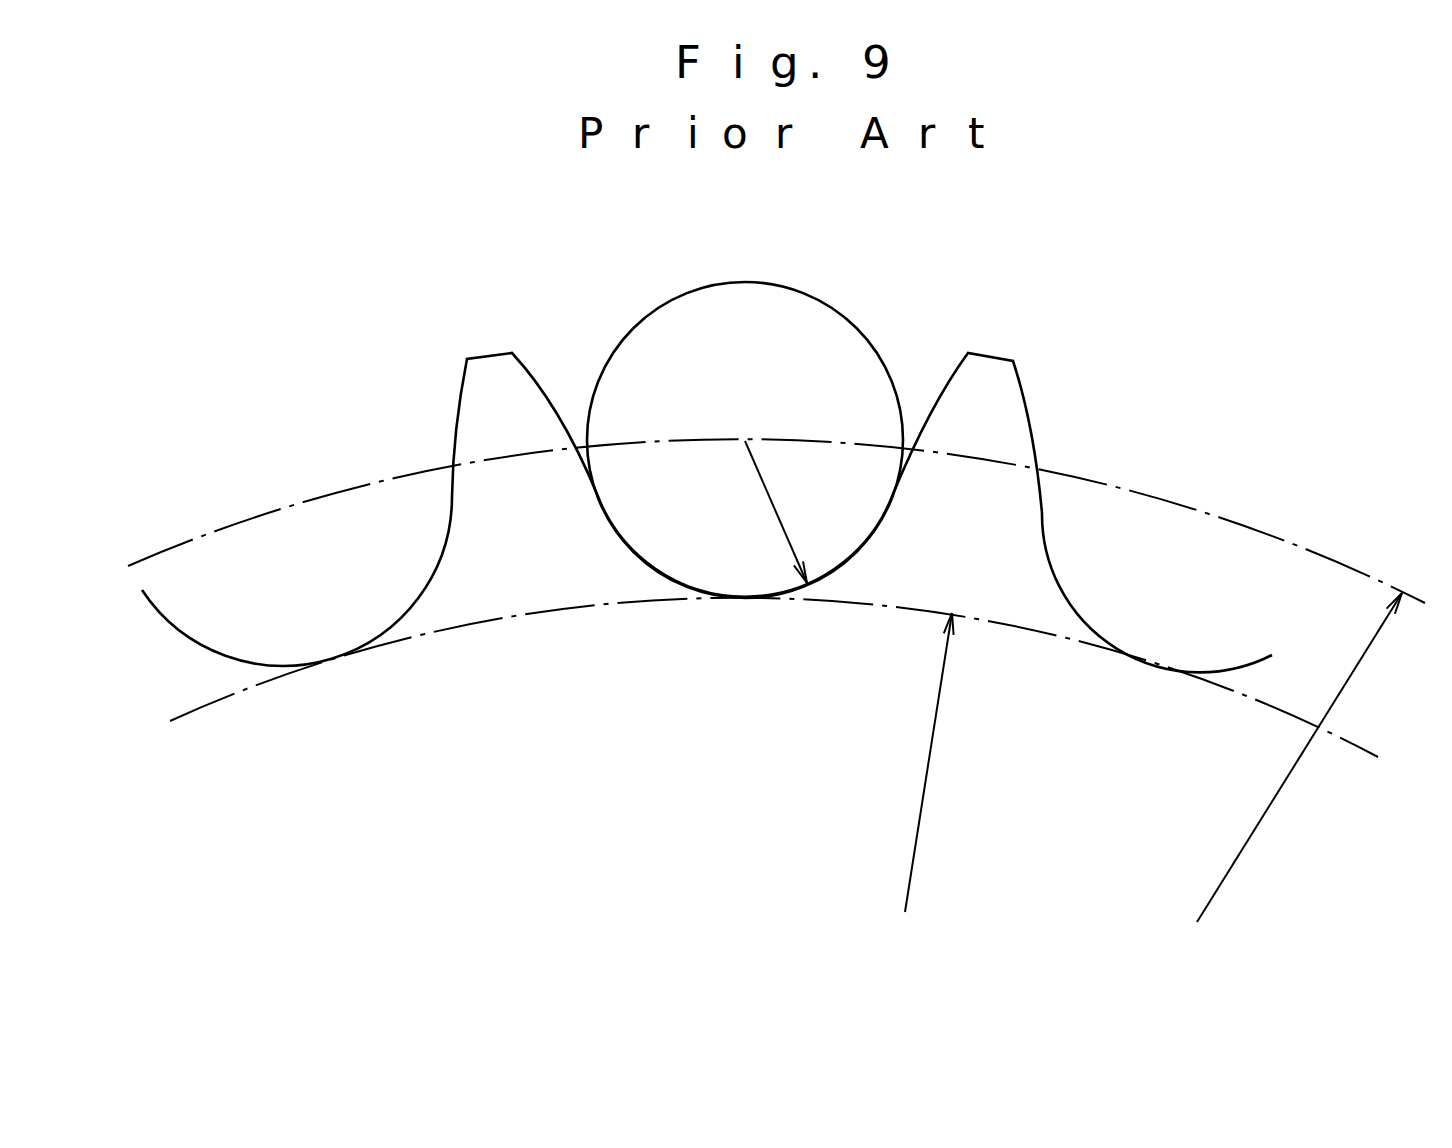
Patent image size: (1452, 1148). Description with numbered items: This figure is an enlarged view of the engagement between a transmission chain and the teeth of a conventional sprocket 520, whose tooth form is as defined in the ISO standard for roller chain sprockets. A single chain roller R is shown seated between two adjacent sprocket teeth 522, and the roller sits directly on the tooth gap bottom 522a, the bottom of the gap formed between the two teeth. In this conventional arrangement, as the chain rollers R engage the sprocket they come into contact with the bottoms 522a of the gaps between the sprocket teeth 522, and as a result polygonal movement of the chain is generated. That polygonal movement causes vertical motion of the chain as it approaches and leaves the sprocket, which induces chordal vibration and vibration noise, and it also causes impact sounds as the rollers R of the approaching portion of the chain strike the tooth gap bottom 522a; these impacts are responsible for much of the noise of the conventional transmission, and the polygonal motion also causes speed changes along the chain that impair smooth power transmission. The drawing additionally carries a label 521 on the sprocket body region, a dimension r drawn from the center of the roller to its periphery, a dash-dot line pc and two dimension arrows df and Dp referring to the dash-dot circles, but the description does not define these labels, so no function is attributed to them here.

The sprocket 520 is at (1162, 357).
The sprocket body 521 is at (648, 832).
The sprocket teeth 522 is at (478, 355).
The tooth gap bottom 522a is at (726, 598).
The chain roller R is at (735, 281).
The roller radius r is at (778, 509).
The pitch circle pc is at (1233, 518).
The root circle diameter df is at (921, 784).
The pitch circle diameter Dp is at (1289, 776).